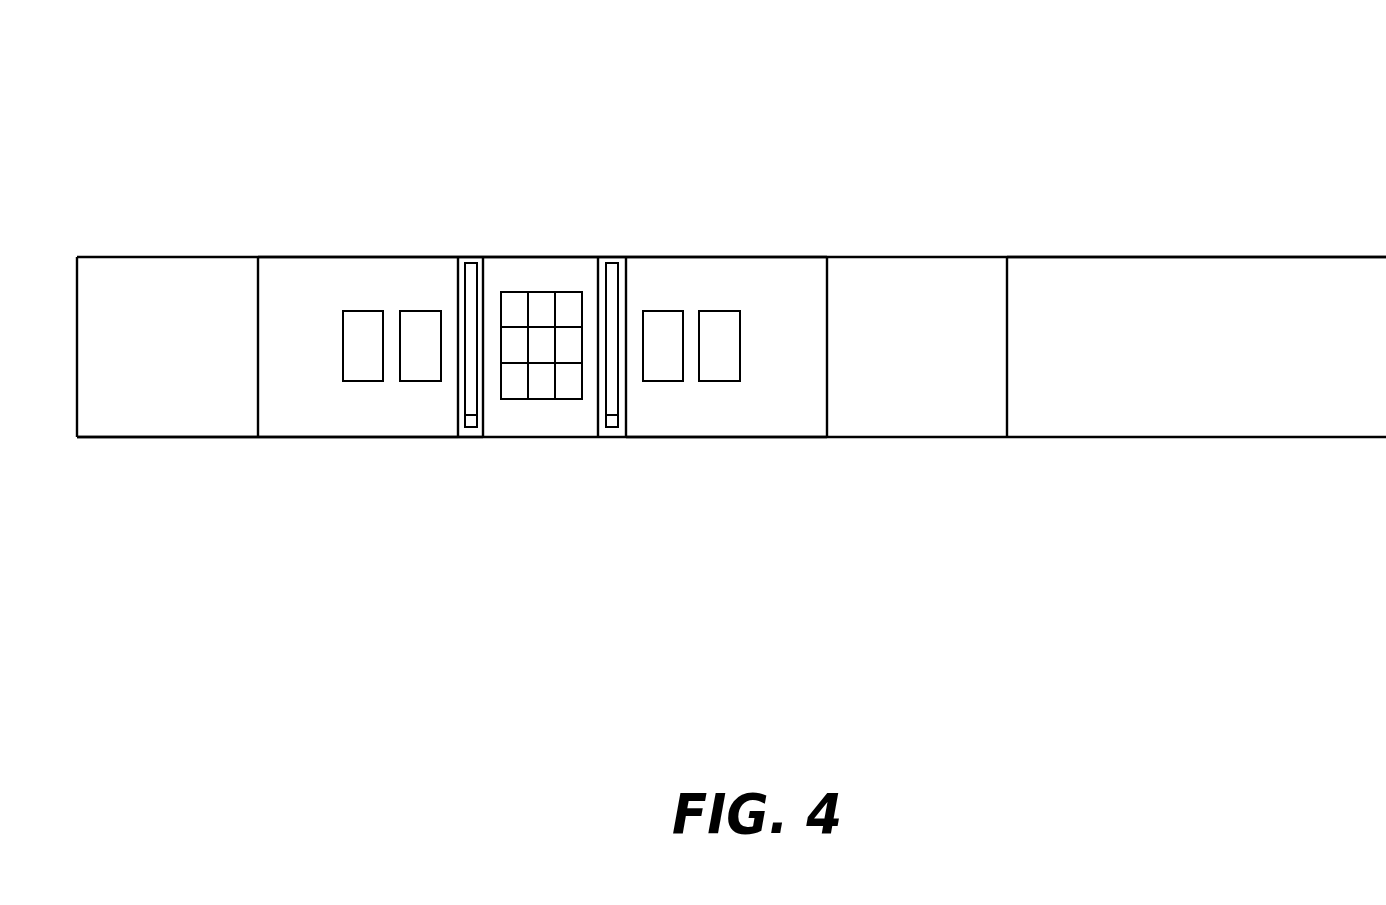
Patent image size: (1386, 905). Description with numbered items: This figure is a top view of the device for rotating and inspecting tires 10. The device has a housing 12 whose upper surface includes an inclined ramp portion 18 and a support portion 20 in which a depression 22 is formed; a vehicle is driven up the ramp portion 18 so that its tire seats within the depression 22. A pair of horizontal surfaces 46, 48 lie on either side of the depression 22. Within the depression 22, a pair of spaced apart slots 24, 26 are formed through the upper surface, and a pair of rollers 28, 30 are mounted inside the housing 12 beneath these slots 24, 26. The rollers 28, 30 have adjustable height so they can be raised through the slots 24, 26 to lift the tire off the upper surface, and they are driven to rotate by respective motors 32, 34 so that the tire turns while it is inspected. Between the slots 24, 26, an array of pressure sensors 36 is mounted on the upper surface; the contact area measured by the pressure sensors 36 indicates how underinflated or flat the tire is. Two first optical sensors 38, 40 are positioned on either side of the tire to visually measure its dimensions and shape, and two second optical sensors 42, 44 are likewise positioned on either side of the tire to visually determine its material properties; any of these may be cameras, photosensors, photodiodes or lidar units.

The device for rotating and inspecting tires 10 is at (810, 202).
The housing 12 is at (152, 437).
The inclined ramp portion 18 is at (1180, 358).
The support portion 20 is at (438, 150).
The depression 22 is at (448, 447).
The first slot 24 is at (447, 403).
The second slot 26 is at (638, 405).
The first roller 28 is at (472, 268).
The second roller 30 is at (611, 268).
The first motor 32 is at (470, 422).
The second motor 34 is at (610, 422).
The pressure sensor 36 is at (539, 390).
The first optical sensor 38 is at (414, 320).
The first optical sensor 40 is at (663, 320).
The second optical sensor 42 is at (357, 320).
The second optical sensor 44 is at (722, 320).
The horizontal surface 46 is at (154, 358).
The horizontal surface 48 is at (902, 358).